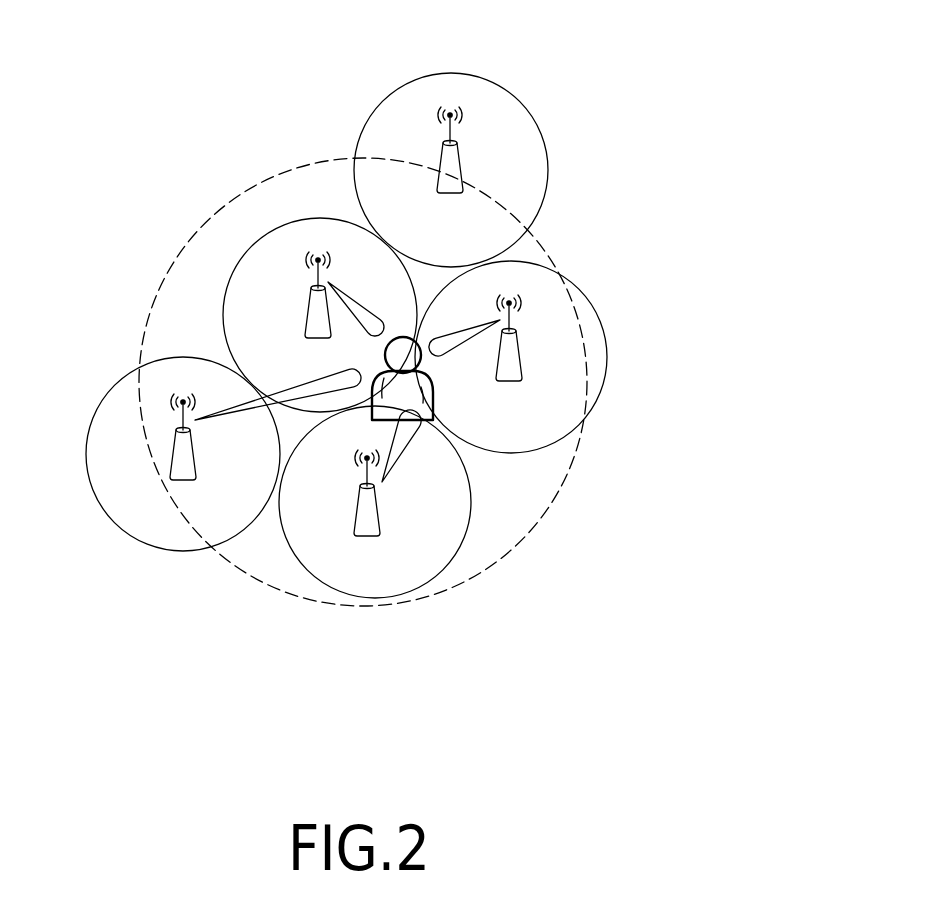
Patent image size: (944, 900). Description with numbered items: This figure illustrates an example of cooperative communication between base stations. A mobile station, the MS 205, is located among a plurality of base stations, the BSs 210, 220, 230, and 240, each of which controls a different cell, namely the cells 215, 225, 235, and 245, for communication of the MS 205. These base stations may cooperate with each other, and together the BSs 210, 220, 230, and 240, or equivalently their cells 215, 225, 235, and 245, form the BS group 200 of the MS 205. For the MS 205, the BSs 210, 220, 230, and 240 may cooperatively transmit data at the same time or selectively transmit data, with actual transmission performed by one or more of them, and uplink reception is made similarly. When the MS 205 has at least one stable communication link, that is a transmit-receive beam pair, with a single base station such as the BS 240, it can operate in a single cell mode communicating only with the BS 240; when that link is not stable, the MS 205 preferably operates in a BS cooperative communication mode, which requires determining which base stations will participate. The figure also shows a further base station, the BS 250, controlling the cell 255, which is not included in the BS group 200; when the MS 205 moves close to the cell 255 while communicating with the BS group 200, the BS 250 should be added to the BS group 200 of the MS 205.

The BS group 200 is at (530, 532).
The MS 205 is at (433, 405).
The BS 210 is at (362, 538).
The cell 215 is at (463, 553).
The BS 220 is at (176, 453).
The cell 225 is at (160, 551).
The BS 230 is at (300, 256).
The cell 235 is at (233, 272).
The BS 240 is at (518, 360).
The cell 245 is at (590, 300).
The BS 250 is at (461, 166).
The cell 255 is at (450, 72).